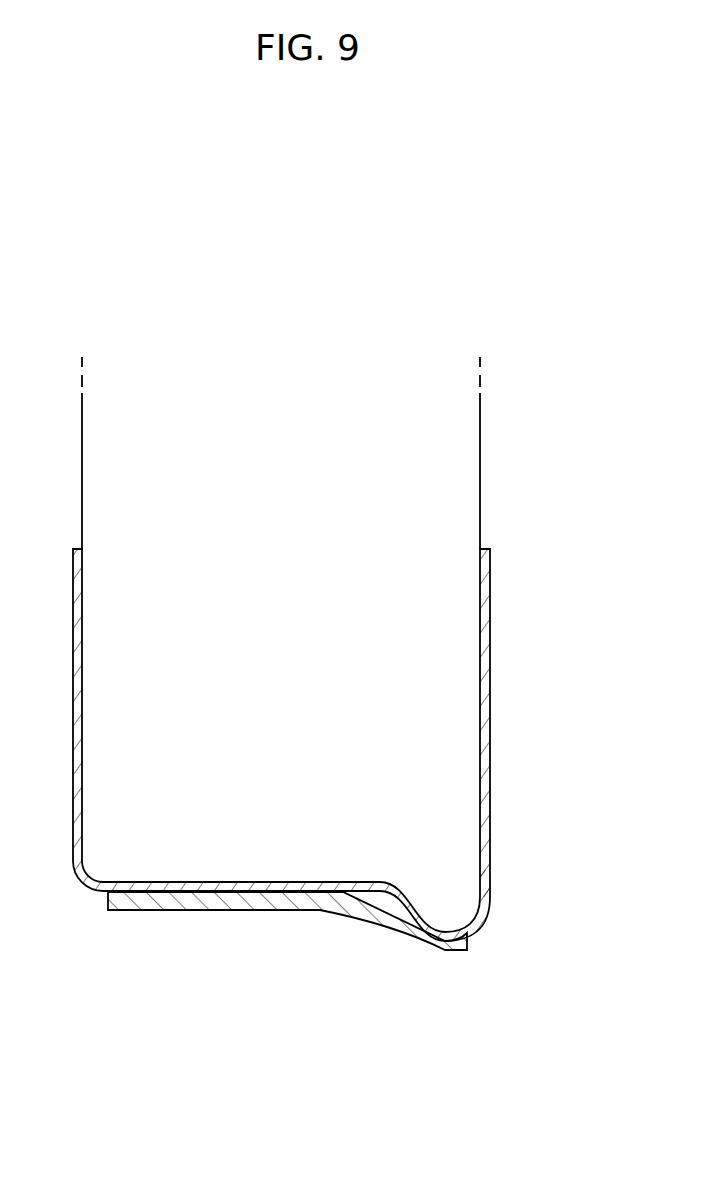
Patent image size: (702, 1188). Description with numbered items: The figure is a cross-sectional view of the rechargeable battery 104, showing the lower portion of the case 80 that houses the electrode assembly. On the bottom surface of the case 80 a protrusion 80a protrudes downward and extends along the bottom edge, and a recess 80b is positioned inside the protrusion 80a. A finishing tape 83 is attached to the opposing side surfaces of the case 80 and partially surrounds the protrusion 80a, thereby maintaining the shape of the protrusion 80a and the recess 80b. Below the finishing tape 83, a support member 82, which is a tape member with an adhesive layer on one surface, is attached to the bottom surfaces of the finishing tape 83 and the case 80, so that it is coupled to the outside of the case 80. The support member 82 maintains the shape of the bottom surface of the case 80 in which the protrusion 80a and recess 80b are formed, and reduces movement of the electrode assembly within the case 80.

The rechargeable battery 104 is at (316, 250).
The case 80 is at (480, 464).
The finishing tape 83 is at (489, 723).
The protrusion 80a is at (462, 901).
The recess 80b is at (192, 892).
The support member 82 is at (318, 903).